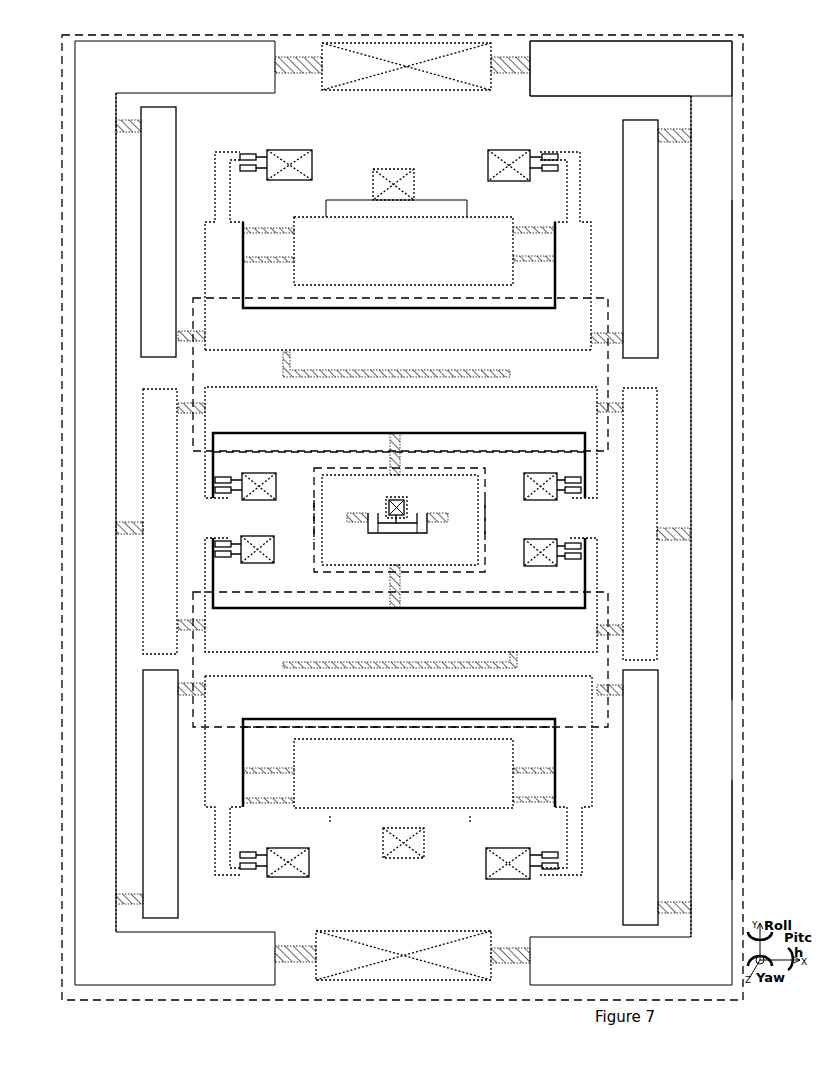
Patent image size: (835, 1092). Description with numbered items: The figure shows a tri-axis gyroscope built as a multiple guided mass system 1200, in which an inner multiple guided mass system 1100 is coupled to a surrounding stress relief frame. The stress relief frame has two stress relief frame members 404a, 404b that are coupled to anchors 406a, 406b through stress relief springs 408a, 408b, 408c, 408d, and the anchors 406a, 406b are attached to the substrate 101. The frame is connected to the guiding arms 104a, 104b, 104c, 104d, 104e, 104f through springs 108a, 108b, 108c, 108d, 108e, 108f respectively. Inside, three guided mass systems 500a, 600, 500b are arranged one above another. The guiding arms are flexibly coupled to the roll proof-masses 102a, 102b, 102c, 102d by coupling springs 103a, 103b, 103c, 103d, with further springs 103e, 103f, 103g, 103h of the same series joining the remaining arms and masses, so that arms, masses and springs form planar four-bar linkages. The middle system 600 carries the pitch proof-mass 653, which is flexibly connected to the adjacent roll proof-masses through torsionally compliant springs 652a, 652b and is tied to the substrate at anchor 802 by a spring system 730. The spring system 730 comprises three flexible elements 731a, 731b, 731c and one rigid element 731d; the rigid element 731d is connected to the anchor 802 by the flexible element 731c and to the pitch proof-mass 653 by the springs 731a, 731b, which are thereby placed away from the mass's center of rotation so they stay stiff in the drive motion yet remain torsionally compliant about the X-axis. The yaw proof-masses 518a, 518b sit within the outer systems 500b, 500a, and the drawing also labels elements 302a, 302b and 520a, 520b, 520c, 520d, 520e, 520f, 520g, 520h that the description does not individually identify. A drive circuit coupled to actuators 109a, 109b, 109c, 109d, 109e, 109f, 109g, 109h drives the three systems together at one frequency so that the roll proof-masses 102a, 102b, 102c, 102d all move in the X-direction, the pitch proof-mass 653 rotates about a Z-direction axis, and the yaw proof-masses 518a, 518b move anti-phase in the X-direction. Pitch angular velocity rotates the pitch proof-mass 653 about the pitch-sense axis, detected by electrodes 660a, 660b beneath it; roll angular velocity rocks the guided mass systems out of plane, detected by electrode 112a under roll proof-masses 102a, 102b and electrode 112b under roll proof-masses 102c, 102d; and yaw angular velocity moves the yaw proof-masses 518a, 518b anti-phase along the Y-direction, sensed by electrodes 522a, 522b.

The substrate 101 is at (740, 97).
The multiple guided mass system 1200 is at (414, 1025).
The multiple guided mass system 1100 is at (522, 138).
The guided mass system 600 is at (675, 512).
The stress relief frame member 404a is at (88, 497).
The stress relief frame member 404b is at (732, 360).
The anchor 406a is at (427, 90).
The anchor 406b is at (425, 953).
The stress relief spring 408a is at (308, 75).
The stress relief spring 408b is at (518, 75).
The stress relief spring 408c is at (285, 957).
The stress relief spring 408d is at (507, 953).
The guiding arm 104a is at (178, 781).
The guiding arm 104b is at (660, 808).
The guiding arm 104c is at (177, 491).
The guiding arm 104d is at (660, 491).
The guiding arm 104e is at (178, 215).
The guiding arm 104f is at (658, 225).
The spring 108a is at (128, 907).
The spring 108b is at (668, 915).
The spring 108c is at (130, 534).
The spring 108d is at (662, 540).
The spring 108e is at (127, 120).
The spring 108f is at (676, 128).
The guided mass system 500a is at (668, 283).
The guided mass system 500b is at (673, 855).
The roll proof-mass 102a is at (457, 700).
The roll proof-mass 102b is at (470, 633).
The roll proof-mass 102c is at (470, 413).
The roll proof-mass 102d is at (466, 338).
The electrode 112a is at (193, 386).
The electrode 112b is at (190, 663).
The spring 103a is at (188, 340).
The spring 103b is at (600, 343).
The spring 103c is at (187, 413).
The spring 103d is at (602, 412).
The hinge 103e is at (180, 627).
The hinge 103f is at (612, 636).
The hinge 103g is at (185, 696).
The hinge 103h is at (605, 696).
The hinge bar 302a is at (516, 668).
The hinge bar 302b is at (492, 369).
The yaw proof-mass 518a is at (476, 765).
The yaw proof-mass 518b is at (451, 243).
The hinge 520a is at (262, 772).
The hinge 520b is at (542, 768).
The hinge 520c is at (257, 800).
The hinge 520d is at (547, 799).
The hinge 520e is at (272, 228).
The hinge 520f is at (542, 227).
The hinge 520g is at (255, 262).
The hinge 520h is at (543, 261).
The electrode 522a is at (367, 830).
The electrode 522b is at (363, 200).
The actuator 109a is at (310, 862).
The actuator 109b is at (485, 850).
The actuator 109c is at (270, 500).
The actuator 109d is at (548, 500).
The actuator 109e is at (246, 537).
The actuator 109f is at (557, 540).
The actuator 109g is at (313, 165).
The actuator 109h is at (488, 167).
The pitch proof-mass 653 is at (358, 495).
The spring 652a is at (402, 577).
The spring 652b is at (403, 470).
The anchor 802 is at (403, 506).
The spring system 730 is at (402, 536).
The flexible element 731a is at (363, 517).
The flexible element 731b is at (432, 517).
The flexible element 731c is at (400, 525).
The rigid element 731d is at (413, 537).
The electrode 660a is at (313, 523).
The electrode 660b is at (485, 532).